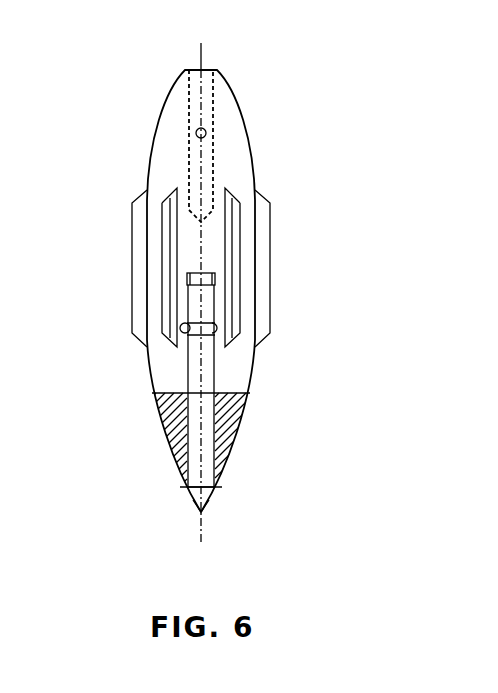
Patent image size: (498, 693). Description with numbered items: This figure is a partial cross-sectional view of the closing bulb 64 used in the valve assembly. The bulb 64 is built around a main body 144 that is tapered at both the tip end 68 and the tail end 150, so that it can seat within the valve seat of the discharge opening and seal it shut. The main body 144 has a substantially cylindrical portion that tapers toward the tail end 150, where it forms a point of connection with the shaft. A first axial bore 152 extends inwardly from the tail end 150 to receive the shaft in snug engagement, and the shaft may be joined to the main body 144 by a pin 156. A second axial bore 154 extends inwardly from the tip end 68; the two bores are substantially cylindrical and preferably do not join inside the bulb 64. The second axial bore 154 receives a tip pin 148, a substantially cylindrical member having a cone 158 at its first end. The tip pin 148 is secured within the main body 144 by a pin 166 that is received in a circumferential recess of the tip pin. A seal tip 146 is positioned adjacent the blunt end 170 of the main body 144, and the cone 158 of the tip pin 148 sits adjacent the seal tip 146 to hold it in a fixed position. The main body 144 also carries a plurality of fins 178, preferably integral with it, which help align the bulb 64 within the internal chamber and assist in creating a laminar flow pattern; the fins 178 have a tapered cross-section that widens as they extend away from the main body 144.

The bulb 64 is at (330, 223).
The tip end 68 is at (205, 517).
The main body 144 is at (247, 368).
The seal tip 146 is at (237, 435).
The tip pin 148 is at (195, 433).
The tail end 150 is at (240, 90).
The first axial bore 152 is at (208, 78).
The second axial bore 154 is at (214, 381).
The pin 156 is at (196, 133).
The cone 158 is at (192, 493).
The pin 166 is at (181, 327).
The blunt end 170 is at (148, 378).
The fins 178 is at (262, 286).